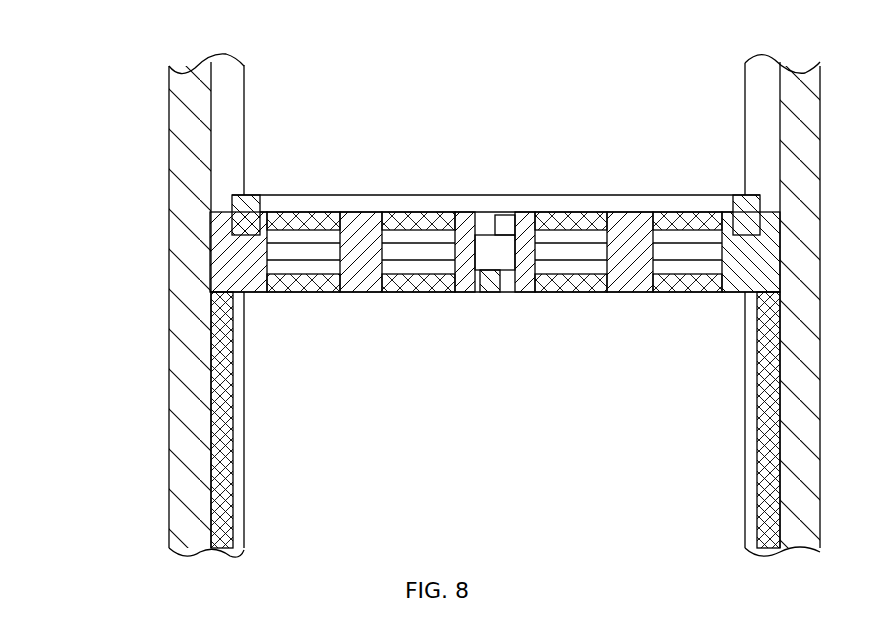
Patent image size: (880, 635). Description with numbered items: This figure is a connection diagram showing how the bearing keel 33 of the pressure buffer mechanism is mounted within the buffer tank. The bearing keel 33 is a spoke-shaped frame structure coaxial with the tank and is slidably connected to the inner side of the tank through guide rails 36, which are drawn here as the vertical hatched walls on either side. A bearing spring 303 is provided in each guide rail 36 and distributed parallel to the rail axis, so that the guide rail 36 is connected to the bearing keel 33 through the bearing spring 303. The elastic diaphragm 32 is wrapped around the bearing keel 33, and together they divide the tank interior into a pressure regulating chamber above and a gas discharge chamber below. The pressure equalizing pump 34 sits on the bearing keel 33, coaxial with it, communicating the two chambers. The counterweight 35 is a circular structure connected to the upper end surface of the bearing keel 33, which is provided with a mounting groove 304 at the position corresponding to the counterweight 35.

The elastic diaphragm 32 is at (682, 228).
The bearing keel 33 is at (495, 194).
The pressure equalizing pump 34 is at (525, 290).
The counterweight 35 is at (496, 159).
The guide rail 36 is at (167, 199).
The bearing spring 303 is at (415, 420).
The mounting groove 304 is at (158, 272).